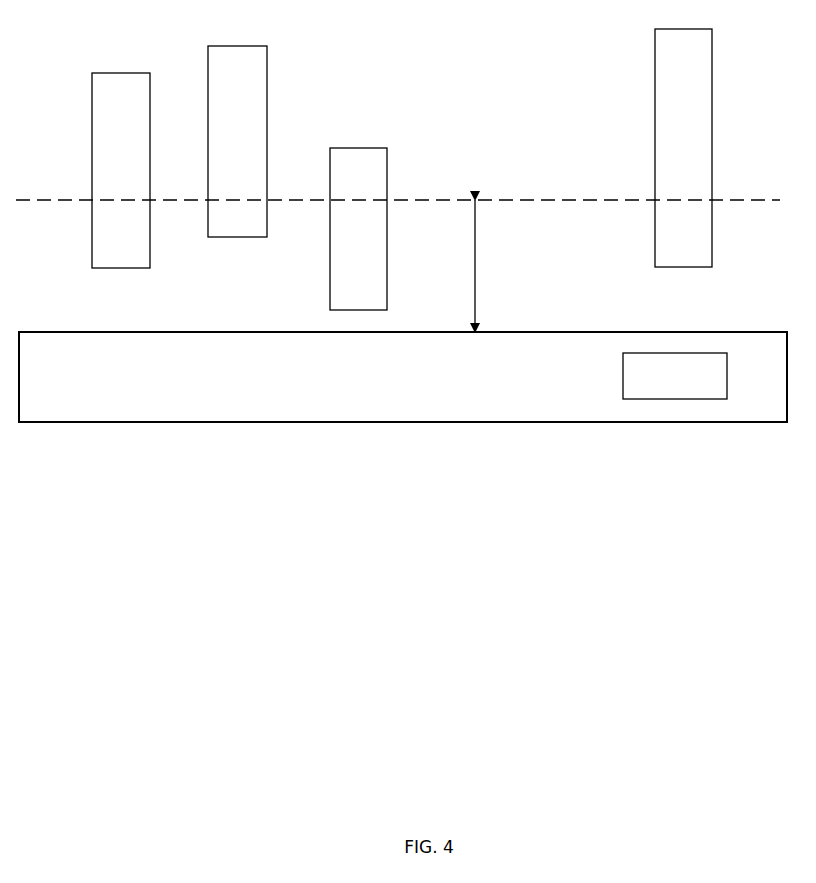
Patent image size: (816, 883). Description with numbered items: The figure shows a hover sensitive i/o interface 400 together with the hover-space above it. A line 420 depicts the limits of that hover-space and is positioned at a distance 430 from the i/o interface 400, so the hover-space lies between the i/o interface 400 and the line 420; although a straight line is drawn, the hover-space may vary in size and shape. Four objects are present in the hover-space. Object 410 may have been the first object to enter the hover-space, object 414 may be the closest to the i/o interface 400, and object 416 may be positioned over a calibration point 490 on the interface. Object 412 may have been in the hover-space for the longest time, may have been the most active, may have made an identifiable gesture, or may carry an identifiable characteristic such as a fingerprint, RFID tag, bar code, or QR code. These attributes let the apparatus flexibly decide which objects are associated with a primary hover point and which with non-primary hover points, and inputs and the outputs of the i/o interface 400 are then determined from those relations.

The hover sensitive i/o interface 400 is at (386, 398).
The object 410 is at (106, 182).
The object 412 is at (221, 152).
The object 414 is at (342, 240).
The object 416 is at (667, 158).
The line 420 is at (594, 200).
The distance 430 is at (477, 295).
The calibration point 490 is at (659, 385).